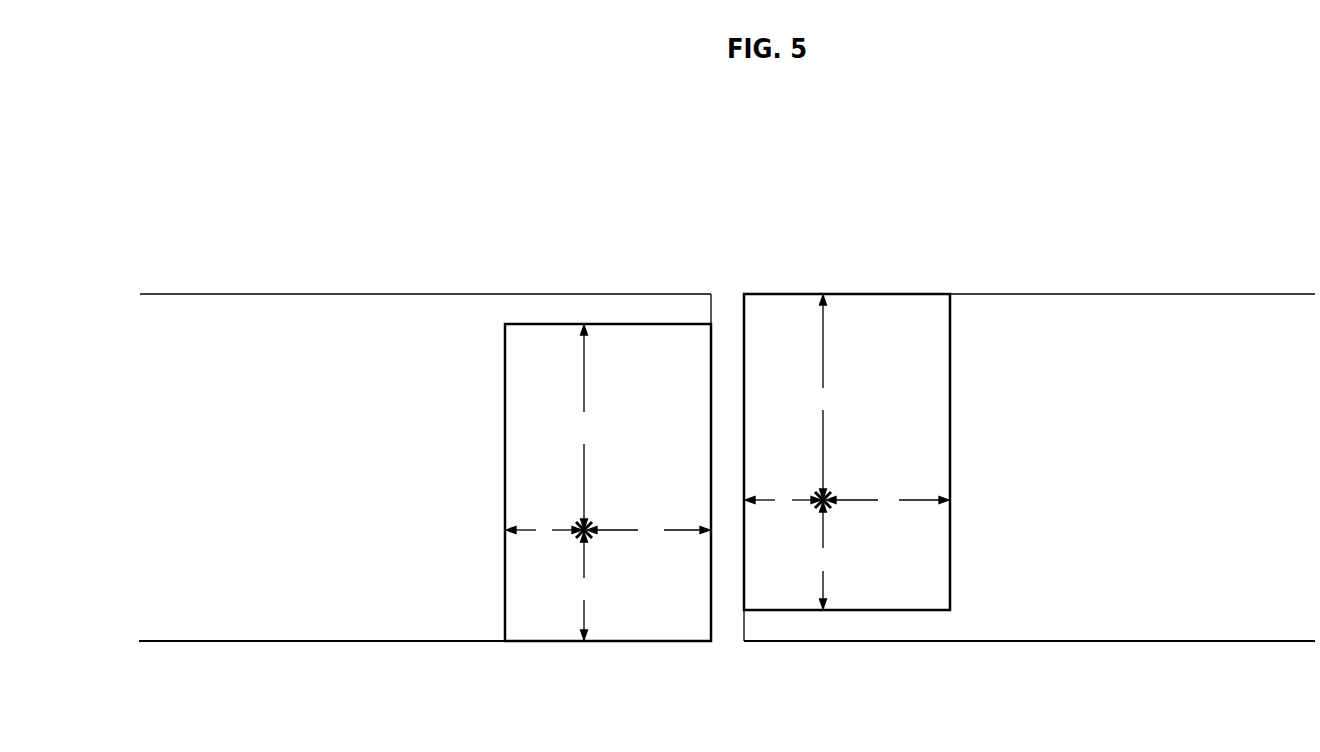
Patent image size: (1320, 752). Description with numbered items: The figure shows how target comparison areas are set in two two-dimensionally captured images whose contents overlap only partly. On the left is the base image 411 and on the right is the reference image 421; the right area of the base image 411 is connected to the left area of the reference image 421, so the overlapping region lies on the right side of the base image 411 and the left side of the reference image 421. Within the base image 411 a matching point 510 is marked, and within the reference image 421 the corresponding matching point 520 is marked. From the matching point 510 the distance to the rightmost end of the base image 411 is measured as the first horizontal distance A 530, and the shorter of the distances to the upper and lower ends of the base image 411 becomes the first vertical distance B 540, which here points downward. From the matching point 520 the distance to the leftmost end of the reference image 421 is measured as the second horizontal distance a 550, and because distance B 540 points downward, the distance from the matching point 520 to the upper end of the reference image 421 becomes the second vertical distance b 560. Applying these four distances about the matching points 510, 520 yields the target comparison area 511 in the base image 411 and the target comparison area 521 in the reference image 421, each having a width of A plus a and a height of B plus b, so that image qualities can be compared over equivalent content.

The base image 411 is at (292, 294).
The reference image 421 is at (1163, 294).
The target comparison area 511 is at (504, 363).
The target comparison area 521 is at (952, 340).
The matching point 510 is at (578, 540).
The matching point 520 is at (828, 493).
The first horizontal distance A 530 is at (650, 545).
The first vertical distance B 540 is at (575, 588).
The second horizontal distance a 550 is at (537, 521).
The second vertical distance b 560 is at (597, 423).